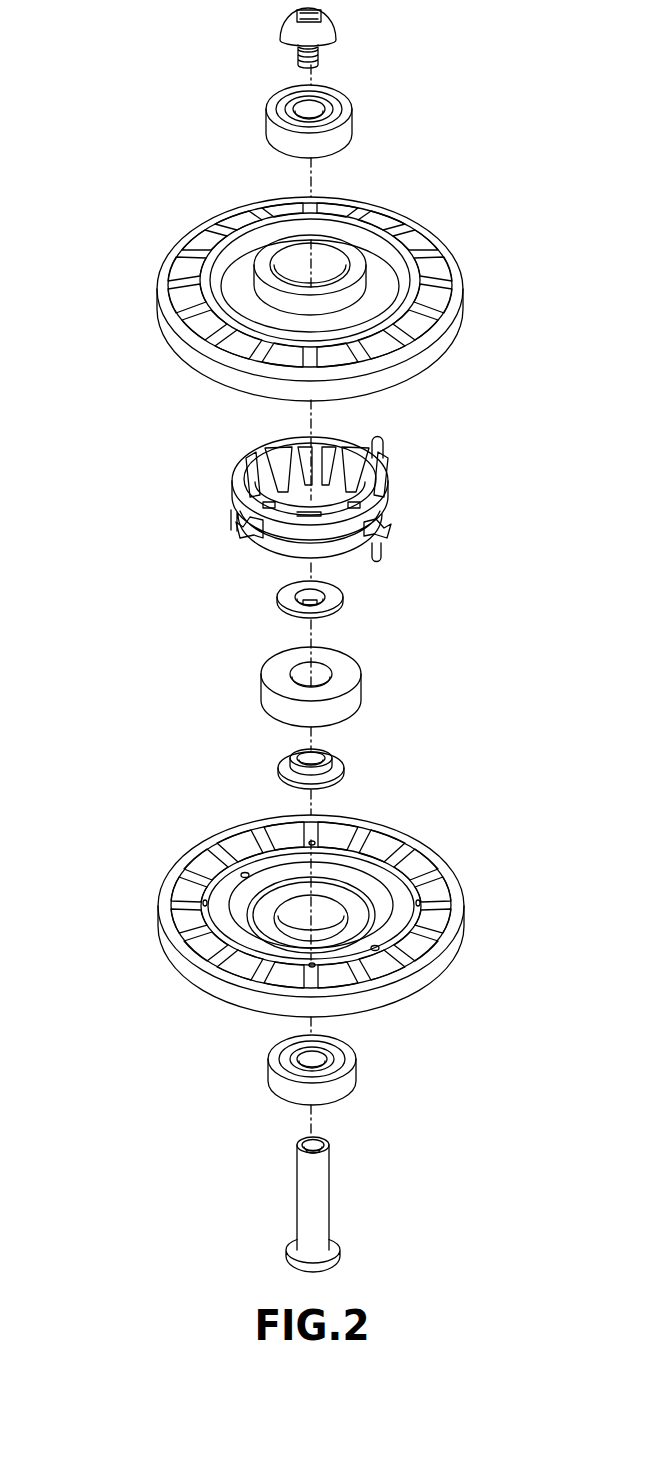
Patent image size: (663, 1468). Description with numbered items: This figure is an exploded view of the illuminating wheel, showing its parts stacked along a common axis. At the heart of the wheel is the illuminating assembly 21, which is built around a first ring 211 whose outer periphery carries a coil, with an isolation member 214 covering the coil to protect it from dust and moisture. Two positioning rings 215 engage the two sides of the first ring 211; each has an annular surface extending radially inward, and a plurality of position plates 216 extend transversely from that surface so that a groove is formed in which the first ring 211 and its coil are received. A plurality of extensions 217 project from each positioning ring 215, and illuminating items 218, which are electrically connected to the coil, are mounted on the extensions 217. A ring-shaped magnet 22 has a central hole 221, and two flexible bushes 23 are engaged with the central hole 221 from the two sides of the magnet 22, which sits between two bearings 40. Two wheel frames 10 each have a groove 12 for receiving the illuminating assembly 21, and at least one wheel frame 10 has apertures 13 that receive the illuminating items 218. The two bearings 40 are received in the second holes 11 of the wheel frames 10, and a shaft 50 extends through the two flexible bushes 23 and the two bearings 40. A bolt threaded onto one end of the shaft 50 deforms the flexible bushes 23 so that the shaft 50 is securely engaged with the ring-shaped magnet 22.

The wheel frame 10 is at (157, 311).
The second hole 11 is at (290, 263).
The groove 12 is at (383, 912).
The apertures 13 is at (245, 872).
The illuminating assembly 21 is at (165, 519).
The first ring 211 is at (262, 478).
The isolation member 214 is at (391, 524).
The positioning ring 215 is at (383, 478).
The position plates 216 is at (262, 465).
The extensions 217 is at (256, 540).
The illuminating items 218 is at (380, 556).
The ring-shaped magnet 22 is at (268, 700).
The central hole 221 is at (298, 675).
The flexible bush 23 is at (343, 603).
The bearing 40 is at (272, 1075).
The shaft 50 is at (300, 1192).